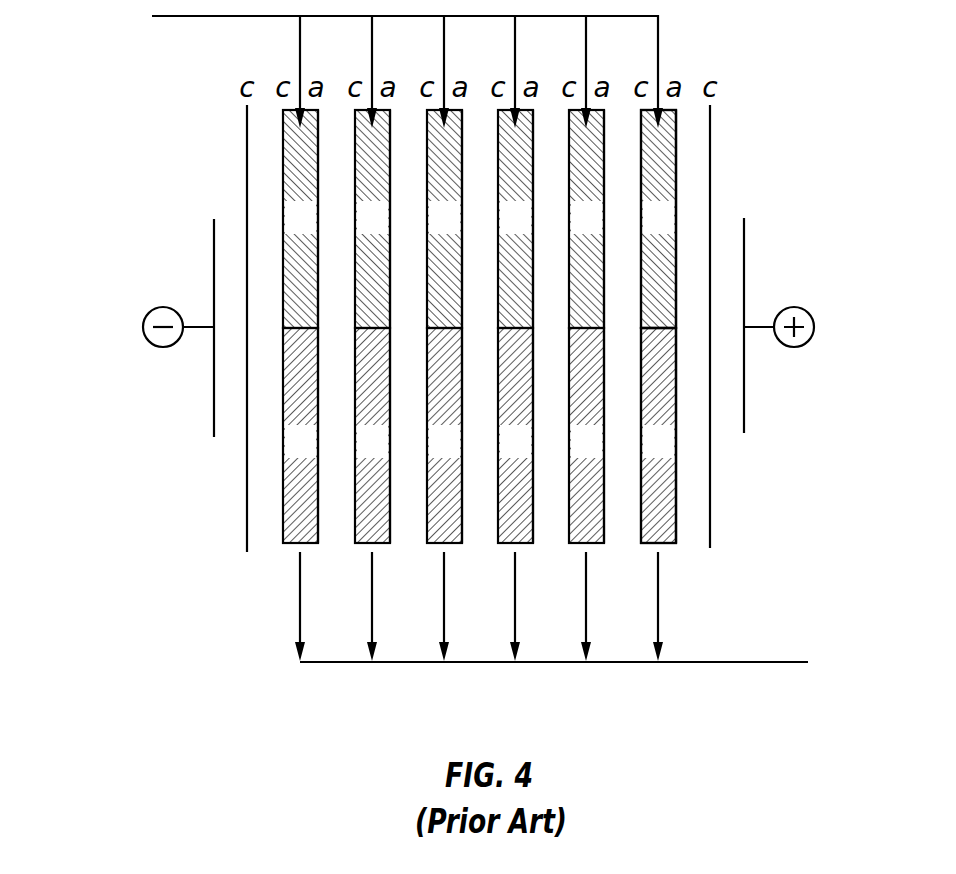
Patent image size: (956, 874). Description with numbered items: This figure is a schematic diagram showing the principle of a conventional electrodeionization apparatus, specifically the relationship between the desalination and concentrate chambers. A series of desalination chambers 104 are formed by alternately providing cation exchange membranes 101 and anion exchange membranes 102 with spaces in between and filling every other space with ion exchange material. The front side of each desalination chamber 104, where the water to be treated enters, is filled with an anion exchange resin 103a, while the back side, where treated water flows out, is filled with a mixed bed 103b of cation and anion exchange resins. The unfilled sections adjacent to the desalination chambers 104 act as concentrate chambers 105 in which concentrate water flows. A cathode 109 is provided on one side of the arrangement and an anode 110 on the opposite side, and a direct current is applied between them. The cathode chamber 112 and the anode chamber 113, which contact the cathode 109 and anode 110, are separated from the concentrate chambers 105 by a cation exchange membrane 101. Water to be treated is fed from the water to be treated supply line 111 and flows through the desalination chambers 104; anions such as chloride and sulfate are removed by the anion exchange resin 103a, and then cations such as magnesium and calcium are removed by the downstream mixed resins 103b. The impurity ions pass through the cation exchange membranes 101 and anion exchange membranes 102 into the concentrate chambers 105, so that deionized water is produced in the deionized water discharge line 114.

The cation exchange membrane 101 is at (247, 533).
The anion exchange membrane 102 is at (317, 543).
The anion exchange resin 103a is at (660, 155).
The mixed bed of cation and anion exchange resins 103b is at (658, 462).
The desalination chamber 104 is at (300, 475).
The concentrate chamber 105 is at (262, 157).
The cathode 109 is at (214, 240).
The anode 110 is at (744, 218).
The water to be treated supply line 111 is at (193, 17).
The cathode chamber 112 is at (230, 290).
The anode chamber 113 is at (726, 260).
The deionized water discharge line 114 is at (708, 661).